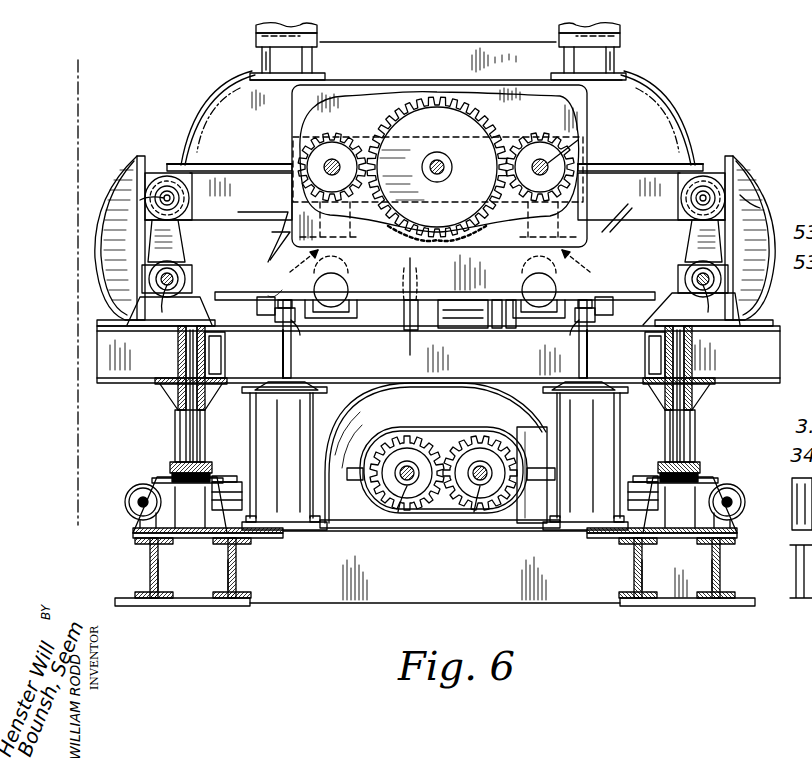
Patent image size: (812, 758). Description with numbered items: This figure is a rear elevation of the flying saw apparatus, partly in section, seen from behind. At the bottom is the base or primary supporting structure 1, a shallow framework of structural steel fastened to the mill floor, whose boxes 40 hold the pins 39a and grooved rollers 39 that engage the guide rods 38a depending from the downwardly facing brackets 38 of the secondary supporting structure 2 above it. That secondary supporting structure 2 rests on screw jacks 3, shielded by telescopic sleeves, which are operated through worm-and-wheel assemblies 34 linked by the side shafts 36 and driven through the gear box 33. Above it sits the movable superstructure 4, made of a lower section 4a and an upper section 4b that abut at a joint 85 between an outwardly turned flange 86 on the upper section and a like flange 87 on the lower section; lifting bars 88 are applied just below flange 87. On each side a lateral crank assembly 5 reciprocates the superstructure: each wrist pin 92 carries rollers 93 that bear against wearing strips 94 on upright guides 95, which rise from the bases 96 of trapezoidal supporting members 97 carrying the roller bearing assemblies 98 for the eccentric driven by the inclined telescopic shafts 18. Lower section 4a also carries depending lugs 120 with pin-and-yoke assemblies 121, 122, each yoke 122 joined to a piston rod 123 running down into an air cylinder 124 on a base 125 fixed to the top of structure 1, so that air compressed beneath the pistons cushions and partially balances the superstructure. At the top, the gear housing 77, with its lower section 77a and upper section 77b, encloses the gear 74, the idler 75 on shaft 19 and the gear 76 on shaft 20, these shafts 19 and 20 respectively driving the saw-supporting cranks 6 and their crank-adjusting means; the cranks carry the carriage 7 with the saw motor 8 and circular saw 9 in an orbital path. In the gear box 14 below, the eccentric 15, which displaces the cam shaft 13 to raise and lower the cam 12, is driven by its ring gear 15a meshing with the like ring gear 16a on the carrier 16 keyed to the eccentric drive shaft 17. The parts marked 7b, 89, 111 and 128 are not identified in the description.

The primary supporting structure 1 is at (133, 538).
The secondary supporting structure 2 is at (88, 346).
The jacks 3 is at (175, 420).
The superstructure 4 is at (465, 40).
The lower section 4a is at (250, 290).
The upper section 4b is at (218, 108).
The lateral crank assemblies 5 is at (186, 252).
The saw-supporting cranks 6 is at (350, 322).
The carriage 7 is at (70, 66).
The spacer block 7b is at (510, 328).
The saw motor 8 is at (486, 328).
The circular saw 9 is at (402, 348).
The cam 12 is at (506, 416).
The cam shaft 13 is at (398, 512).
The gear box 14 is at (371, 450).
The eccentric 15 is at (398, 450).
The ring gear 15a is at (420, 448).
The carrier 16 is at (479, 448).
The ring gear 16a is at (470, 498).
The eccentric drive shaft 17 is at (474, 512).
The inclined telescopic shafts 18 is at (443, 305).
The inclined telescopic shaft 19 is at (444, 160).
The inclined telescopic shaft 20 is at (550, 140).
The gear box 33 is at (538, 440).
The worm-and-wheel assemblies 34 is at (152, 478).
The side shafts 36 is at (138, 502).
The downwardly facing brackets 38 is at (177, 382).
The guide rods 38a is at (178, 350).
The rollers 39 is at (176, 468).
The pins 39a is at (222, 480).
The boxes 40 is at (197, 534).
The gear 74 is at (340, 145).
The idler 75 is at (500, 148).
The gear 76 is at (575, 152).
The gear housing 77 is at (382, 92).
The lower section 77a is at (576, 248).
The upper section 77b is at (580, 112).
The joint 85 is at (218, 166).
The outwardly turned flange 86 is at (258, 165).
The flange 87 is at (236, 171).
The lifting bars 88 is at (282, 250).
The brace 89 is at (247, 228).
The wrist pin 92 is at (140, 200).
The rollers 93 is at (186, 191).
The wearing strip 94 is at (147, 157).
The upright guide 95 is at (116, 178).
The bases 96 is at (100, 321).
The trapezoidal supporting members 97 is at (140, 306).
The roller bearing assembly 98 is at (174, 270).
The support web 111 is at (722, 240).
The depending lugs 120 is at (594, 300).
The pin-and-yoke assembly 121 is at (274, 318).
The yoke 122 is at (291, 330).
The piston rod 123 is at (288, 363).
The air cylinder 124 is at (256, 410).
The base 125 is at (292, 532).
The block 128 is at (268, 291).